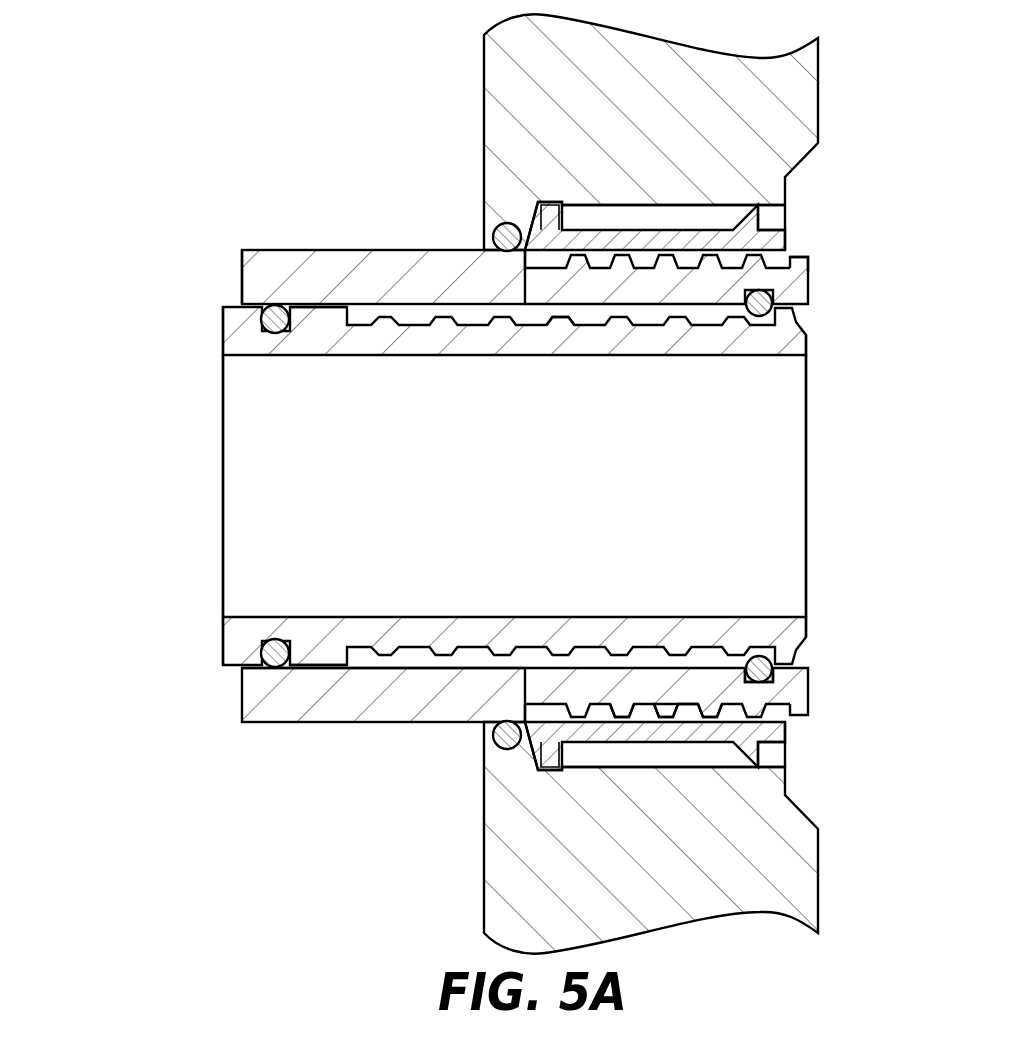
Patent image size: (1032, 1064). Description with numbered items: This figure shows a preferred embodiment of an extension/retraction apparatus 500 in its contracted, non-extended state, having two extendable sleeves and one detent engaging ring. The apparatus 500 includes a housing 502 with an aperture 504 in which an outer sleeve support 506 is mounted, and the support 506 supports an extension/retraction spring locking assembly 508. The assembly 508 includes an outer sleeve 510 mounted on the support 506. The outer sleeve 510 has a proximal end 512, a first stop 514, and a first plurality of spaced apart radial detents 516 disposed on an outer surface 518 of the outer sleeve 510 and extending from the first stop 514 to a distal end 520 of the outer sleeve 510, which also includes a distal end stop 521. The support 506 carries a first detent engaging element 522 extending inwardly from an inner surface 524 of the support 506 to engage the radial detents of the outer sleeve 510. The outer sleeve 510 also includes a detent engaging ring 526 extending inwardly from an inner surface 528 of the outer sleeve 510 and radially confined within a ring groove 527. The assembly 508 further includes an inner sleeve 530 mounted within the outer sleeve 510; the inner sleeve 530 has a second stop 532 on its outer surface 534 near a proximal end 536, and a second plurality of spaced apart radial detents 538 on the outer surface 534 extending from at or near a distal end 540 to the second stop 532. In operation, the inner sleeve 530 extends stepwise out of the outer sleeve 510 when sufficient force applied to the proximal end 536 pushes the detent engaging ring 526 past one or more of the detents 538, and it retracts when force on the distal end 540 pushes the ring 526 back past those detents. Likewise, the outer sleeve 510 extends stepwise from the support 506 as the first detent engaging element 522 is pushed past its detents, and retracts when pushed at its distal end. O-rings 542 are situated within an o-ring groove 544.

The extension/retraction apparatus 500 is at (104, 489).
The housing 502 is at (664, 111).
The aperture 504 is at (800, 198).
The outer sleeve support 506 is at (686, 197).
The extension/retraction spring locking assembly 508 is at (841, 472).
The outer sleeve 510 is at (352, 268).
The proximal end 512 is at (241, 273).
The first stop 514 is at (524, 262).
The first plurality of spaced apart radial detents 516 is at (668, 716).
The outer surface 518 is at (686, 704).
The distal end 520 is at (808, 283).
The distal end stop 521 is at (808, 258).
The first detent engaging element 522 is at (793, 242).
The inner surface 524 is at (652, 258).
The detent engaging ring 526 is at (763, 664).
The ring groove 527 is at (778, 685).
The inner surface 528 is at (410, 672).
The inner sleeve 530 is at (219, 470).
The second stop 532 is at (316, 310).
The outer surface 534 is at (360, 642).
The proximal end 536 is at (225, 500).
The second plurality of spaced apart radial detents 538 is at (560, 322).
The distal end 540 is at (805, 496).
The O-rings 542 is at (274, 305).
The o-ring groove 544 is at (278, 639).